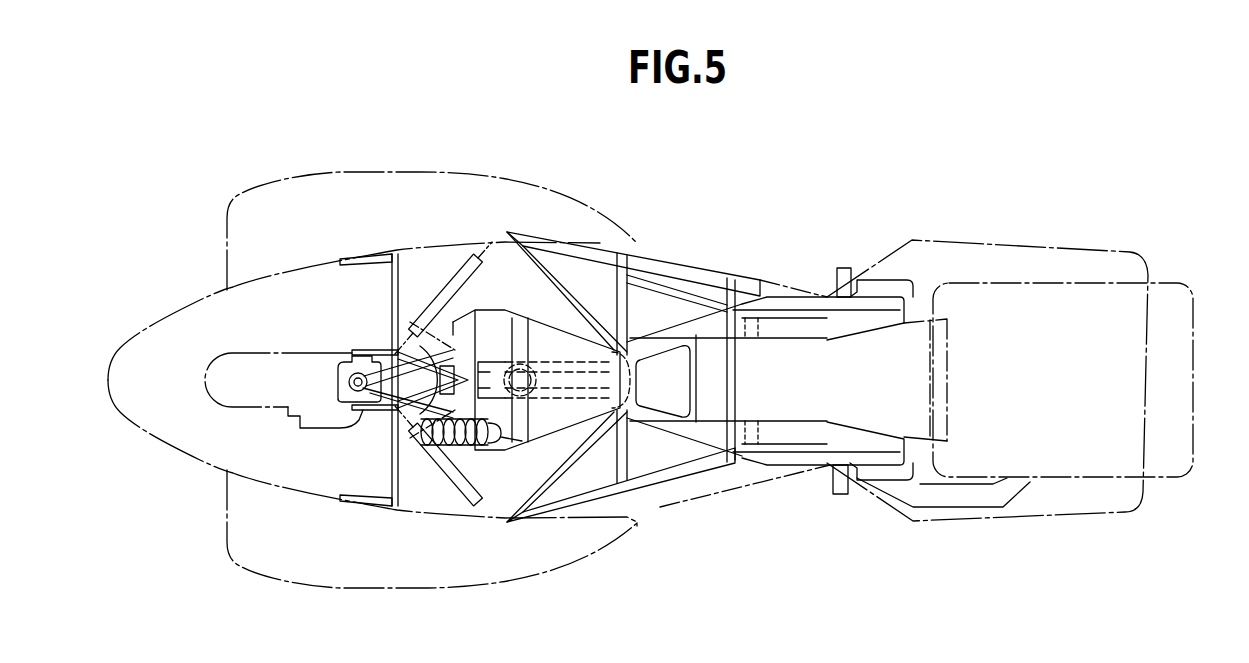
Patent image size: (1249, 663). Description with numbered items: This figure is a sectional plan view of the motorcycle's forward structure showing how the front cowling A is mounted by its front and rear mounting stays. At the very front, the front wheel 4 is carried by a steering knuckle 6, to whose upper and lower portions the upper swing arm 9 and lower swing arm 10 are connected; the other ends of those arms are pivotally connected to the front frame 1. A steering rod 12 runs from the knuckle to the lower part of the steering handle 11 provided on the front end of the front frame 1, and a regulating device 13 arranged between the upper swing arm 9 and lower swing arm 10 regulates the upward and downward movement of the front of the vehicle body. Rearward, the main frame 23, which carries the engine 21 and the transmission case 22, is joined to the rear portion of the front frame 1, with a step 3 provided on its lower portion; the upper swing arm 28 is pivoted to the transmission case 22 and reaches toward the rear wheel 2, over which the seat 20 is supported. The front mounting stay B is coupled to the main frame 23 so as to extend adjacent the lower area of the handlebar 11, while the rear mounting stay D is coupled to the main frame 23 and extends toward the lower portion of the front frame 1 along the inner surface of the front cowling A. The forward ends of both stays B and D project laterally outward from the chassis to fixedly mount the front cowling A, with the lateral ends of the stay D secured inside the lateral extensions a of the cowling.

The front frame 1 is at (560, 338).
The rear wheel 2 is at (1185, 372).
The step 3 is at (843, 266).
The front wheel 4 is at (247, 357).
The steering knuckle 6 is at (345, 432).
The upper swing arm 9 is at (368, 352).
The lower swing arm 10 is at (385, 438).
The steering handle 11 is at (477, 250).
The steering rod 12 is at (389, 351).
The regulating device 13 is at (455, 435).
The seat 20 is at (912, 330).
The engine 21 is at (773, 438).
The transmission case 22 is at (872, 472).
The main frame 23 is at (811, 458).
The upper swing arm 28 is at (971, 498).
The front cowling A is at (130, 336).
The front mounting stay B is at (400, 468).
The rear mounting stay D is at (695, 472).
The extensions a is at (414, 170).